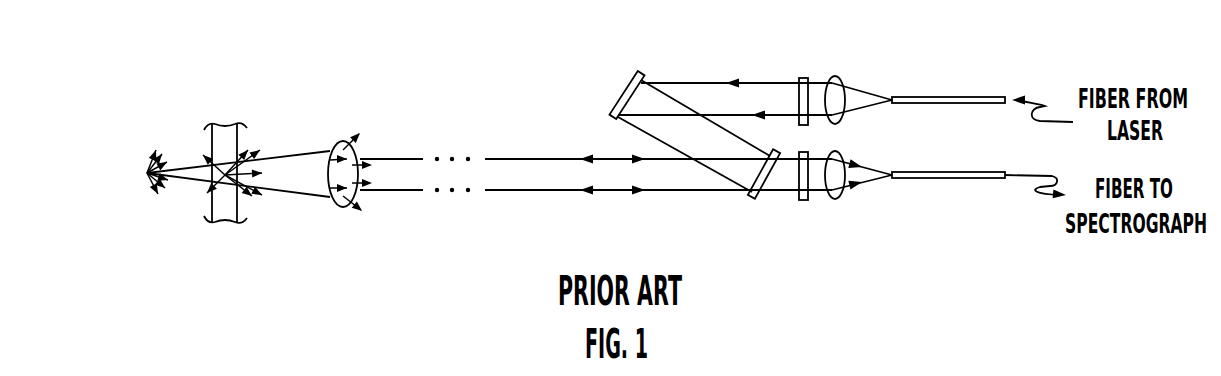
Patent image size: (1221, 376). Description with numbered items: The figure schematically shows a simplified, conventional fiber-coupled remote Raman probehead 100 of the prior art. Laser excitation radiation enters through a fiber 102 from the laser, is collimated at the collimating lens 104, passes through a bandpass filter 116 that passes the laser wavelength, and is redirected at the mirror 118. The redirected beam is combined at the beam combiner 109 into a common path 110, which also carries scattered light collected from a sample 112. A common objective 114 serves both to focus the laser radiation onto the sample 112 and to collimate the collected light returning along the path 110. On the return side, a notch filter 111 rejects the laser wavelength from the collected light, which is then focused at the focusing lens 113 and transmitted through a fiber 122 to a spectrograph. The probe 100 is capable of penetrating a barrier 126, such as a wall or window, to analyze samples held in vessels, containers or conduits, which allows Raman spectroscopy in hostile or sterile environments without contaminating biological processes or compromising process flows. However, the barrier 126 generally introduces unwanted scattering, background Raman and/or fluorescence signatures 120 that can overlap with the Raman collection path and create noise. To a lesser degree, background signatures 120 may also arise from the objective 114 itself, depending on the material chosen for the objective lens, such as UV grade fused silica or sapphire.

The fiber-coupled remote Raman probehead 100 is at (471, 60).
The fiber 102 is at (903, 96).
The collimating lens 104 is at (833, 78).
The beam combiner 109 is at (755, 196).
The path 110 is at (563, 206).
The notch filter 111 is at (802, 202).
The sample 112 is at (128, 186).
The focusing lens 113 is at (837, 199).
The objective 114 is at (259, 160).
The bandpass filter 116 is at (803, 76).
The redirecting mirror 118 is at (633, 72).
The background signatures 120 is at (318, 217).
The fiber 122 is at (903, 170).
The barrier 126 is at (225, 155).